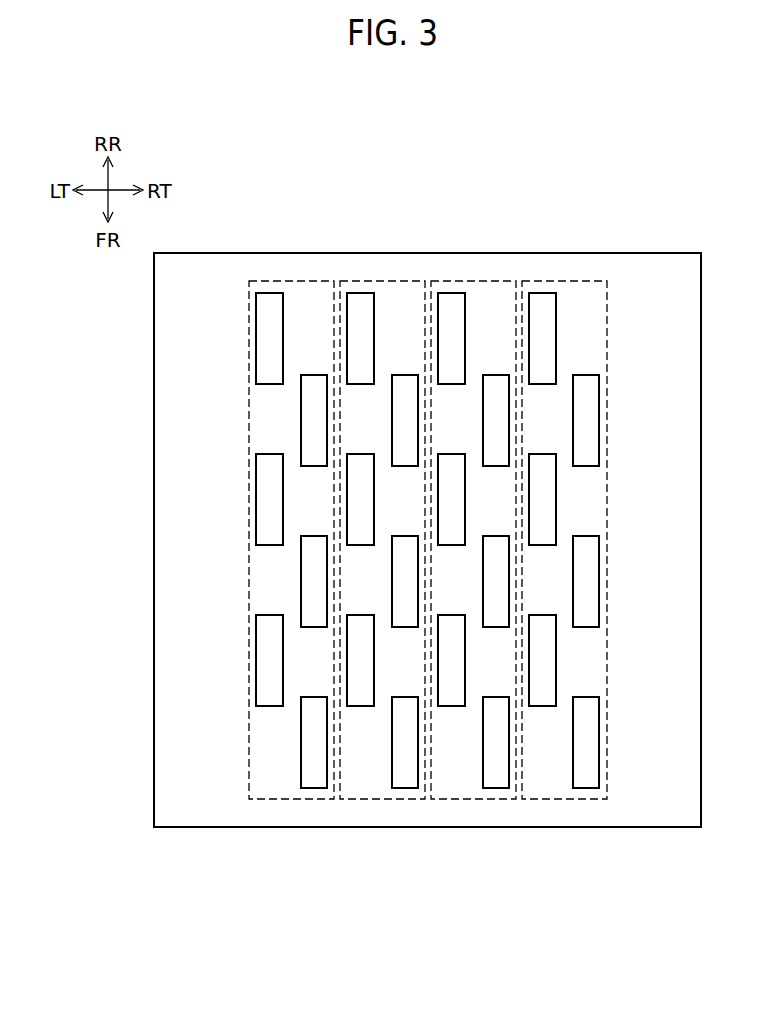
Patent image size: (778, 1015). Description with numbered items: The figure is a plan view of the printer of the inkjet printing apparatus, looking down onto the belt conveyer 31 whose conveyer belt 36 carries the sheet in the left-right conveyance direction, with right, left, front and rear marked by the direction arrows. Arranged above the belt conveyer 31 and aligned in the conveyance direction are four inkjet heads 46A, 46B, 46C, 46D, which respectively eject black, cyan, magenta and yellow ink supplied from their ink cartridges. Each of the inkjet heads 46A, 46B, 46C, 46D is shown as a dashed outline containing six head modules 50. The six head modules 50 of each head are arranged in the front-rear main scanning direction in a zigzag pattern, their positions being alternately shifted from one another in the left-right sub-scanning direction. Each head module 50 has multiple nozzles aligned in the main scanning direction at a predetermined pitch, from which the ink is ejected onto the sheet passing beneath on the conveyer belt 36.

The belt conveyer 31 is at (650, 250).
The conveyer belt 36 is at (217, 262).
The inkjet head 46A is at (290, 277).
The inkjet head 46B is at (381, 277).
The inkjet head 46C is at (472, 277).
The inkjet head 46D is at (563, 277).
The head module 50 is at (256, 344).